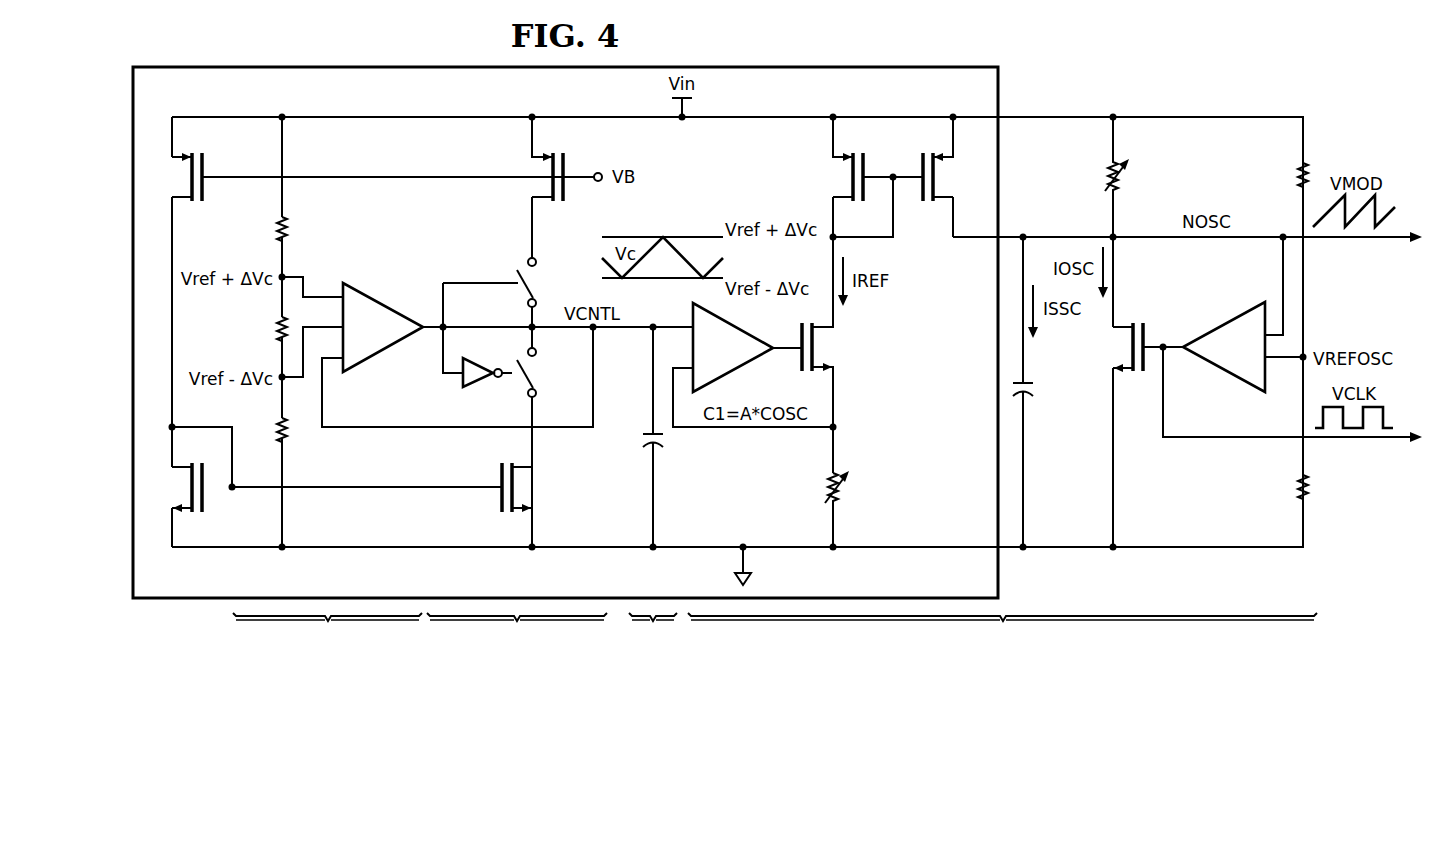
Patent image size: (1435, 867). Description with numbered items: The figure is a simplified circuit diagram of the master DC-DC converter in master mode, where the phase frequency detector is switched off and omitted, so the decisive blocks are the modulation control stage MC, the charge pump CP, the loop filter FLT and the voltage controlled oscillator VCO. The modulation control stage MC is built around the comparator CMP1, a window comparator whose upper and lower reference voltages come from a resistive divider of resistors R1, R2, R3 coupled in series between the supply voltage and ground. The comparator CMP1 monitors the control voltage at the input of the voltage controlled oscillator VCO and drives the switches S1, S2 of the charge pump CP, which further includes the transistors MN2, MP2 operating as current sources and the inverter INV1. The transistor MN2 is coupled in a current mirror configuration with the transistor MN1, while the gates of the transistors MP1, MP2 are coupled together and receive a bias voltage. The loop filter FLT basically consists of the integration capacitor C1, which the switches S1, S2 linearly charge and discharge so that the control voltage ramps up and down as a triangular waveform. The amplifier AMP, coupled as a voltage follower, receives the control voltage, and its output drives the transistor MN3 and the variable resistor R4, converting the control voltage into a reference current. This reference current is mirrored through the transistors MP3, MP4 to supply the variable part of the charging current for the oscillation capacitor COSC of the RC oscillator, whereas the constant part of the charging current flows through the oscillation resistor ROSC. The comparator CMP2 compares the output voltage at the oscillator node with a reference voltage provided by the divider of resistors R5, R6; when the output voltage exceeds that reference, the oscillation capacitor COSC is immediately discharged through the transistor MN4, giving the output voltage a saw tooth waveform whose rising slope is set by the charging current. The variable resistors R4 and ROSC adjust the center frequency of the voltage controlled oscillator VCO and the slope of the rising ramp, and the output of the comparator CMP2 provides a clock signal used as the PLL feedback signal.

The transistor MP1 is at (191, 177).
The transistor MP2 is at (560, 187).
The transistor MP3 is at (830, 177).
The transistor MP4 is at (956, 177).
The transistor MN1 is at (183, 487).
The transistor MN2 is at (529, 505).
The transistor MN3 is at (837, 355).
The transistor MN4 is at (1129, 435).
The resistor R1 is at (268, 229).
The resistor R2 is at (268, 329).
The resistor R3 is at (268, 430).
The variable resistor R4 is at (824, 509).
The resistor R5 is at (1289, 177).
The resistor R6 is at (1289, 488).
The oscillation resistor ROSC is at (1144, 222).
The oscillation capacitor COSC is at (1052, 392).
The integration capacitor C1 is at (637, 437).
The comparator CMP1 is at (383, 327).
The comparator CMP2 is at (1224, 347).
The inverter INV1 is at (484, 360).
The amplifier AMP is at (733, 347).
The switch S1 is at (541, 282).
The switch S2 is at (541, 372).
The modulation control stage MC is at (327, 661).
The charge pump CP is at (517, 661).
The loop filter FLT is at (653, 661).
The voltage controlled oscillator VCO is at (1002, 635).